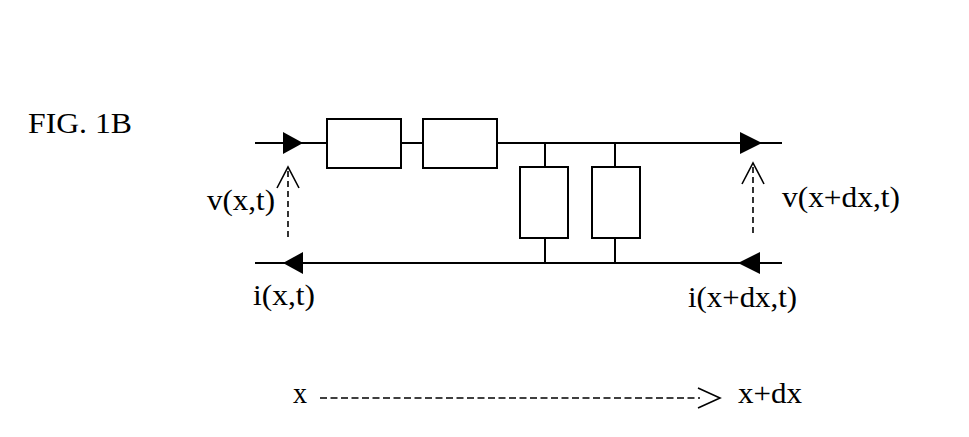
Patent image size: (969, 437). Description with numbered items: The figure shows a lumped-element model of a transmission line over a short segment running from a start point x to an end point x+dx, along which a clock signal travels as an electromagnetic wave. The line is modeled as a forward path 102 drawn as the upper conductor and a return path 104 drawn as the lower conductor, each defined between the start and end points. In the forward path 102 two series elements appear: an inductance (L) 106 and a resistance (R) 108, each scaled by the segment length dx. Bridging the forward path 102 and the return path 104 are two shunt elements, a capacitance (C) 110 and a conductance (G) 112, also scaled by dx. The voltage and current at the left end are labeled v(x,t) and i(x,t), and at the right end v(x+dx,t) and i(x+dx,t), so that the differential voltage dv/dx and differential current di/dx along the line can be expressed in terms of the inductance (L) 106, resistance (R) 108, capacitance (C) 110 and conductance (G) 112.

The forward path 102 is at (551, 144).
The return path 104 is at (551, 262).
The inductance (L) 106 is at (401, 96).
The resistance (R) 108 is at (500, 102).
The capacitance (C) 110 is at (527, 257).
The conductance (G) 112 is at (639, 256).